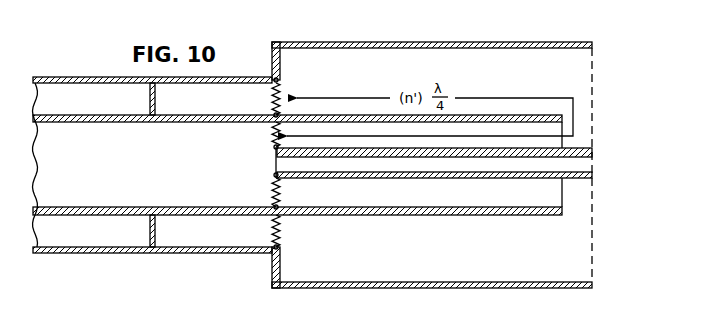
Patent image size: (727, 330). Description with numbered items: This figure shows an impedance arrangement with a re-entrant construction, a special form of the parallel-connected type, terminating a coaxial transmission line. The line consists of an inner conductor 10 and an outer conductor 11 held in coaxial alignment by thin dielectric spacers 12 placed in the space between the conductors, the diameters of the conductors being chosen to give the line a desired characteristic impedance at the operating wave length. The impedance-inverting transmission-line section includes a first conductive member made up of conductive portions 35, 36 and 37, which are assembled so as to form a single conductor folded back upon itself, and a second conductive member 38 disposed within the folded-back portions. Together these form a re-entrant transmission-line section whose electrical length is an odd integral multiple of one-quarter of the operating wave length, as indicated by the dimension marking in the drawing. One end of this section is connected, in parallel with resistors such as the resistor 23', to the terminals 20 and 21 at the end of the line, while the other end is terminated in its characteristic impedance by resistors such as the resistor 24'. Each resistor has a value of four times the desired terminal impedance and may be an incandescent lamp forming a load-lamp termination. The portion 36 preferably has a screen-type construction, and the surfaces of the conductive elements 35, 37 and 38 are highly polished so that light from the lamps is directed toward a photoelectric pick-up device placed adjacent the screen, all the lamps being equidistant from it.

The inner conductor 10 is at (105, 123).
The outer conductor 11 is at (95, 77).
The dielectric spacer 12 is at (156, 93).
The terminal 20 is at (280, 112).
The terminal 21 is at (280, 81).
The resistor 23' is at (257, 99).
The resistor 24' is at (255, 134).
The conductive portion 35 is at (437, 42).
The screen 36 is at (592, 72).
The conductive portion 37 is at (458, 178).
The second conductive member 38 is at (458, 215).